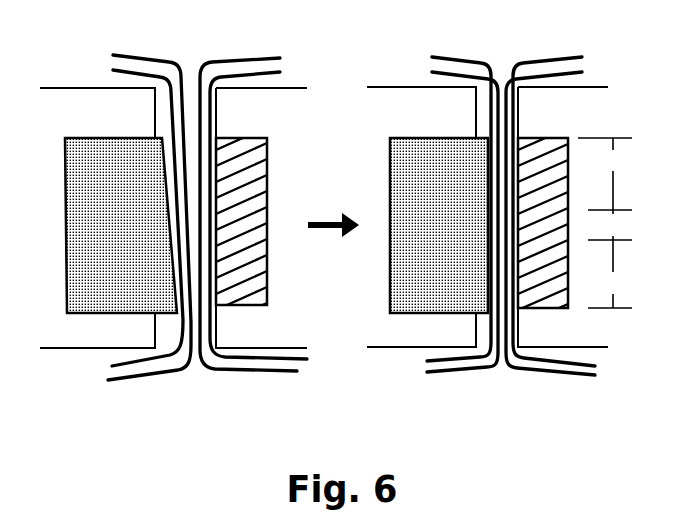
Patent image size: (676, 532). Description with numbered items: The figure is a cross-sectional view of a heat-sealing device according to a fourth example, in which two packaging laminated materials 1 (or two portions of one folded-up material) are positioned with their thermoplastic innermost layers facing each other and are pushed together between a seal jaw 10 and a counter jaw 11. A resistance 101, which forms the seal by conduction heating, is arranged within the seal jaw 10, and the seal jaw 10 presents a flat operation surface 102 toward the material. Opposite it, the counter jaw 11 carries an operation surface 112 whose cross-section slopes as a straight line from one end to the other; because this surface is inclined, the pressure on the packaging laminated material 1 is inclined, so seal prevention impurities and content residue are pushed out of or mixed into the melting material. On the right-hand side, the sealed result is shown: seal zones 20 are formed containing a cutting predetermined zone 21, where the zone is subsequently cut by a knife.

The packaging laminated material 1 is at (112, 55).
The seal jaw 10 is at (307, 358).
The resistance 101 is at (240, 305).
The flat operation surface 102 is at (214, 147).
The counter jaw 11 is at (105, 364).
The operation surface 112 is at (167, 188).
The seal zone 20 is at (605, 223).
The cutting predetermined zone 21 is at (613, 225).